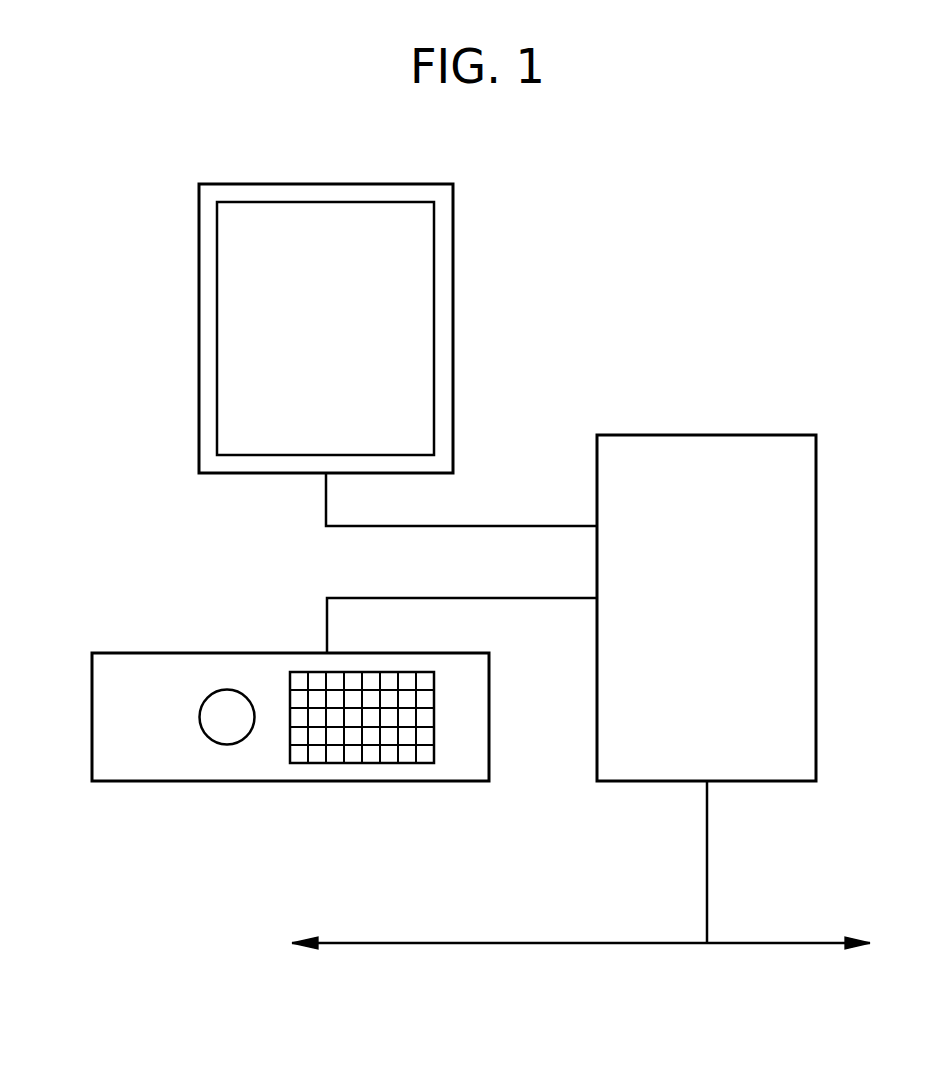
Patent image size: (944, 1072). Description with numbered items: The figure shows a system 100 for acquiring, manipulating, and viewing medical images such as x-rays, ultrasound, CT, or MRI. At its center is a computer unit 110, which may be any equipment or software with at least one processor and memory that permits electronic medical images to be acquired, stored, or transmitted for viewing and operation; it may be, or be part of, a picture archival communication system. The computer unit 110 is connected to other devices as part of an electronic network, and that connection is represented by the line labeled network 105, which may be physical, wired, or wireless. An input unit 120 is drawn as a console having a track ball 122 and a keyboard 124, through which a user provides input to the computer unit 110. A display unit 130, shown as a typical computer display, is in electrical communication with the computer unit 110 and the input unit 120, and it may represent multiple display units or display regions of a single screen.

The system 100 is at (188, 122).
The network 105 is at (500, 962).
The computer unit 110 is at (704, 435).
The input unit 120 is at (130, 783).
The track ball 122 is at (226, 745).
The keyboard 124 is at (424, 764).
The display unit 130 is at (454, 262).